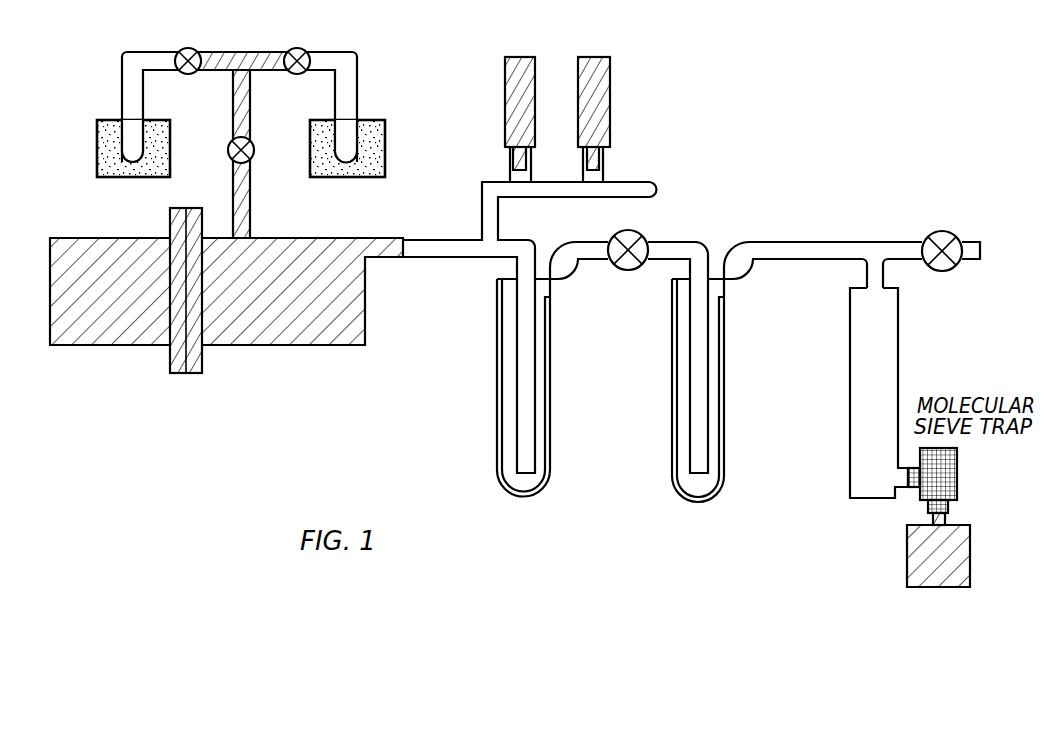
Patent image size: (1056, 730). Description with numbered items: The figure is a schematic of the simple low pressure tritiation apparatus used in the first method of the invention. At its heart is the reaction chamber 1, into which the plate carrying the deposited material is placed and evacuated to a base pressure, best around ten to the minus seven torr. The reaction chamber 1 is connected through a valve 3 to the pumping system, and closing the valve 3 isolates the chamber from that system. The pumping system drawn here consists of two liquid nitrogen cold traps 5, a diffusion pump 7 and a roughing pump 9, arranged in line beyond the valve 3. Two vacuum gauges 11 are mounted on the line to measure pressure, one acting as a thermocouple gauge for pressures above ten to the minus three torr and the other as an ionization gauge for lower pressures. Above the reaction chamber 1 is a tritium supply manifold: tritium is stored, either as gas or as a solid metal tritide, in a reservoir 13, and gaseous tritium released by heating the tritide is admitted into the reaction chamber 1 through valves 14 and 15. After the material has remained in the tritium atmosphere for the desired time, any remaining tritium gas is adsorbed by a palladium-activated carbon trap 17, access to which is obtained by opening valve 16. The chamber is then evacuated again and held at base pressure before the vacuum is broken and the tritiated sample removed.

The reaction chamber 1 is at (313, 340).
The valve 3 is at (643, 240).
The liquid nitrogen cold traps 5 is at (500, 345).
The diffusion pump 7 is at (850, 331).
The roughing pump 9 is at (958, 525).
The vacuum gauges 11 is at (505, 83).
The reservoir 13 is at (97, 132).
The valve 14 is at (190, 47).
The valve 15 is at (248, 160).
The valve 16 is at (304, 47).
The Palladium-activated carbon trap 17 is at (385, 141).